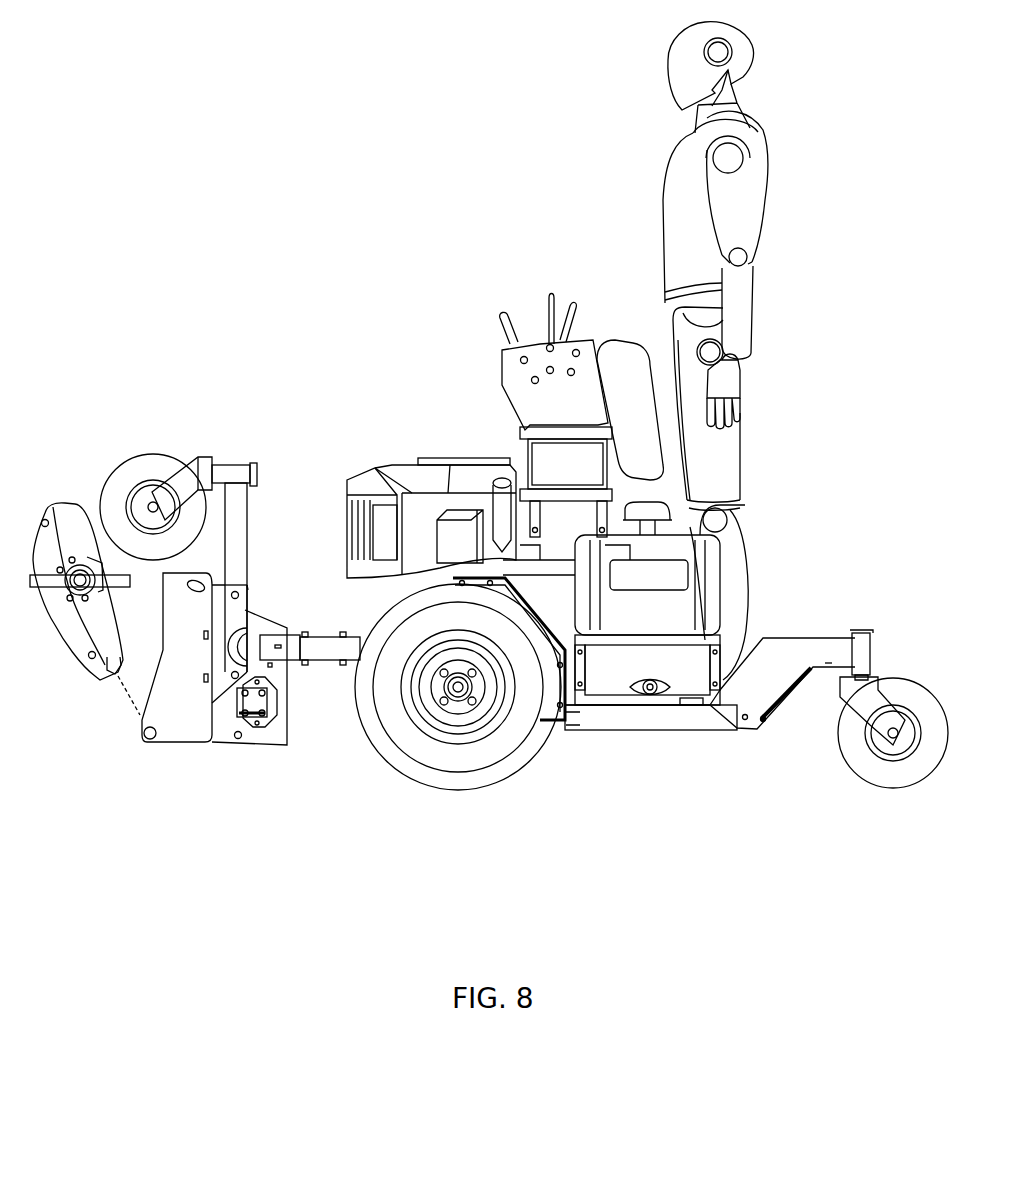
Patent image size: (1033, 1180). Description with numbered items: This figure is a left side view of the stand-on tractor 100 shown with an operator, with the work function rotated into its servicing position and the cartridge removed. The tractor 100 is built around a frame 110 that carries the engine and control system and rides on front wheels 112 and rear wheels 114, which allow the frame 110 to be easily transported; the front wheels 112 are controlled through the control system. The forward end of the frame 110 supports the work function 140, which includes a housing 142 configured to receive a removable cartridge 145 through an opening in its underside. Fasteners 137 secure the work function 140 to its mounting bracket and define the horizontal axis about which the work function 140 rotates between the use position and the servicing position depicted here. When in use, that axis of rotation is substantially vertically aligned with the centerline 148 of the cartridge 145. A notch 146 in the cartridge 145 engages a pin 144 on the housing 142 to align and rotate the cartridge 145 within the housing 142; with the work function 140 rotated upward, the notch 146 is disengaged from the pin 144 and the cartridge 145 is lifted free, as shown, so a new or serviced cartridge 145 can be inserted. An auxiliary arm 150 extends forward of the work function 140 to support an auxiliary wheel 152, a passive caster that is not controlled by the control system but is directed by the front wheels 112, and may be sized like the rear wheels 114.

The stand-on tractor 100 is at (268, 222).
The frame 110 is at (663, 666).
The front wheels 112 is at (510, 770).
The rear wheels 114 is at (923, 690).
The fasteners 137 is at (256, 622).
The work function 140 is at (293, 762).
The housing 142 is at (173, 725).
The pin 144 is at (154, 741).
The cartridge 145 is at (55, 503).
The notch 146 is at (117, 680).
The centerline 148 is at (102, 676).
The auxiliary arm 150 is at (247, 528).
The auxiliary wheel 152 is at (175, 462).